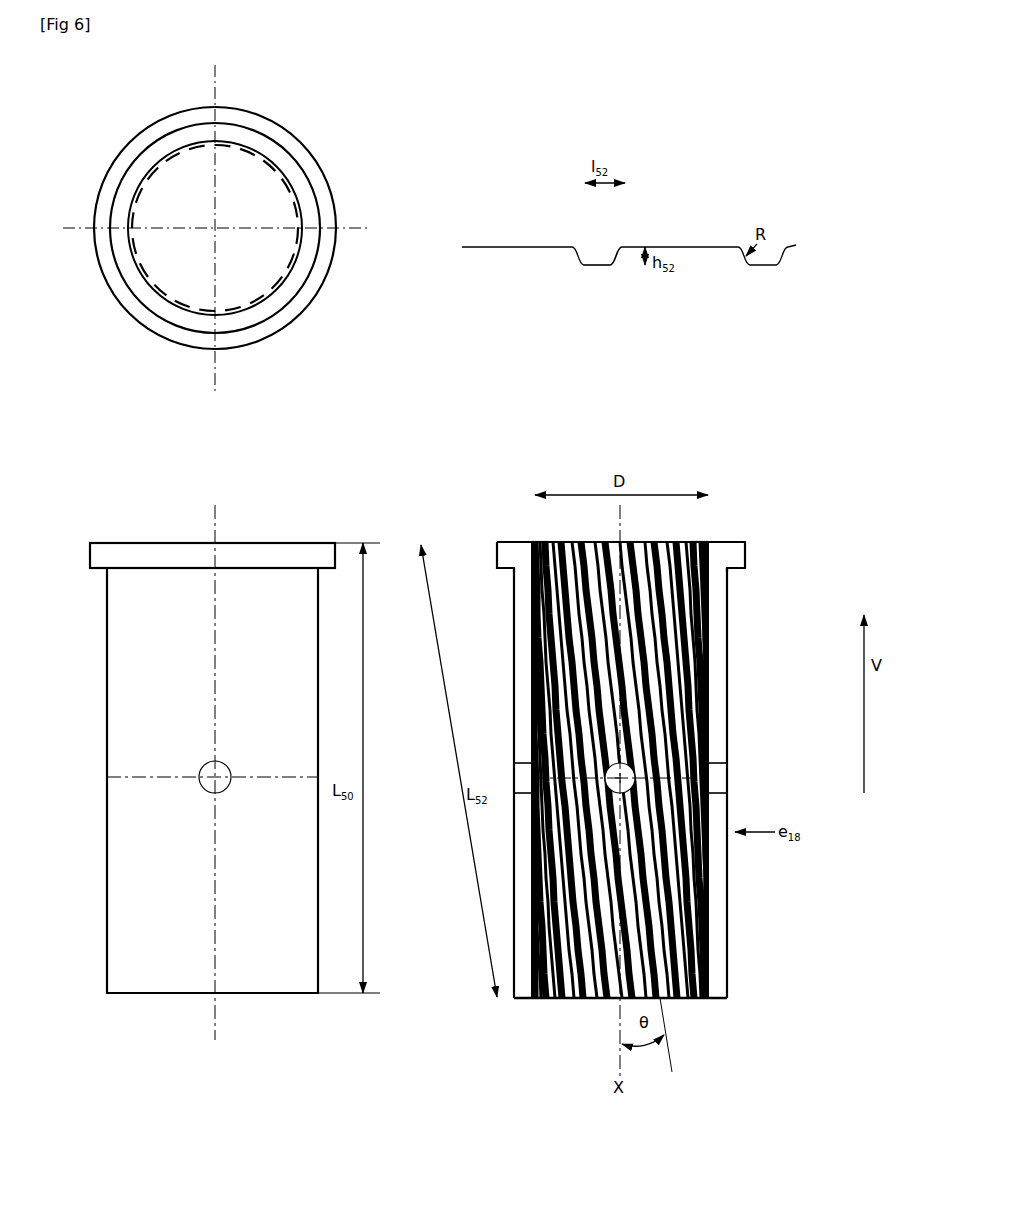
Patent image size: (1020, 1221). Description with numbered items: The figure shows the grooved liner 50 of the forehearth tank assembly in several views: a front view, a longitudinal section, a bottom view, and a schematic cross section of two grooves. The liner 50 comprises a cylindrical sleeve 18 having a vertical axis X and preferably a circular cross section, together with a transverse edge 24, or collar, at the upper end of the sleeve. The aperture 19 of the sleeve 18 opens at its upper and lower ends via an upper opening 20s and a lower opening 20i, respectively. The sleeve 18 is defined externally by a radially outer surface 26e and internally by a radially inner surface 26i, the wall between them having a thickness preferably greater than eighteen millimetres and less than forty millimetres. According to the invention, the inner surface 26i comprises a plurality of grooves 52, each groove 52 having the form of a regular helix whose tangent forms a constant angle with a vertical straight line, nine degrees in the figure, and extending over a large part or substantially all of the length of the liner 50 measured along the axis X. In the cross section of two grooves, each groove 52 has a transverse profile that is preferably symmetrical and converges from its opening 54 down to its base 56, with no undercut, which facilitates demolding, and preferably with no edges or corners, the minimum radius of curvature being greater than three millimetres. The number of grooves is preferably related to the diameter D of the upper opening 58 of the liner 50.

The cylindrical sleeve 18 is at (728, 808).
The aperture 19 is at (644, 752).
The lower opening 20i is at (687, 998).
The upper opening 20s is at (690, 543).
The transverse edge 24 is at (745, 548).
The outer surface 26e is at (728, 890).
The inner surface 26i is at (533, 247).
The liner 50 is at (659, 765).
The groove 52 is at (603, 238).
The opening 54 is at (612, 252).
The base 56 is at (609, 265).
The upper opening 58 is at (541, 543).